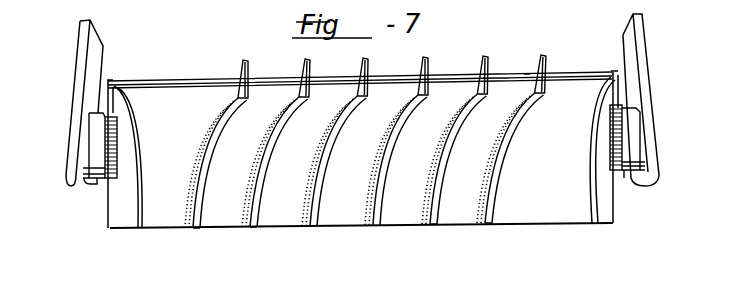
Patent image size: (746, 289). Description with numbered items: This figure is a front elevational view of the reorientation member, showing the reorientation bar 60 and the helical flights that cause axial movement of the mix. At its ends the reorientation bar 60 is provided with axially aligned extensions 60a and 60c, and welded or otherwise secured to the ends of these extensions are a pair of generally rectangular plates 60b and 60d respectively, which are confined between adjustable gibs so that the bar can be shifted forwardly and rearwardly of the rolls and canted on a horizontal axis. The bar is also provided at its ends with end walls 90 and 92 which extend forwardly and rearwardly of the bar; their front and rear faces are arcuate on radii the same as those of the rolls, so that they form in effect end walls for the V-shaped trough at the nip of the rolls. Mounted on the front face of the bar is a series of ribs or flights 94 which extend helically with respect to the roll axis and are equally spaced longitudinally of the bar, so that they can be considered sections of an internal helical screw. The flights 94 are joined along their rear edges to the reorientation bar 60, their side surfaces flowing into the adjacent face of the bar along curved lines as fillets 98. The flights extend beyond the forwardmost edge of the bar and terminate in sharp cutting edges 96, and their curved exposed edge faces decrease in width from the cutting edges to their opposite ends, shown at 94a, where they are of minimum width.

The reorientation bar 60 is at (167, 81).
The extension 60a is at (94, 184).
The rectangular plate 60b is at (72, 78).
The extension 60c is at (618, 172).
The rectangular plate 60d is at (653, 112).
The end wall 90 is at (118, 136).
The end wall 92 is at (598, 140).
The flights 94 is at (273, 131).
The minimum width end of flight 94a is at (246, 228).
The cutting edges 96 is at (487, 61).
The fillets 98 is at (527, 78).